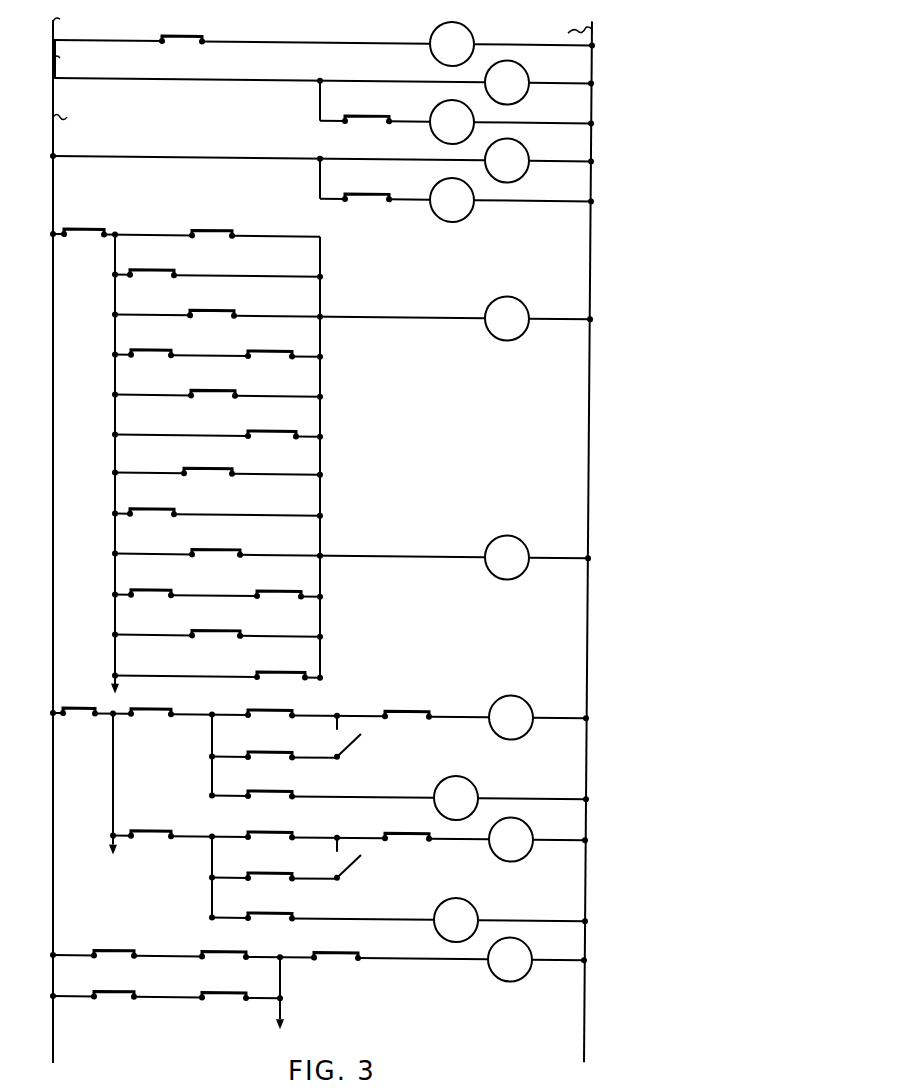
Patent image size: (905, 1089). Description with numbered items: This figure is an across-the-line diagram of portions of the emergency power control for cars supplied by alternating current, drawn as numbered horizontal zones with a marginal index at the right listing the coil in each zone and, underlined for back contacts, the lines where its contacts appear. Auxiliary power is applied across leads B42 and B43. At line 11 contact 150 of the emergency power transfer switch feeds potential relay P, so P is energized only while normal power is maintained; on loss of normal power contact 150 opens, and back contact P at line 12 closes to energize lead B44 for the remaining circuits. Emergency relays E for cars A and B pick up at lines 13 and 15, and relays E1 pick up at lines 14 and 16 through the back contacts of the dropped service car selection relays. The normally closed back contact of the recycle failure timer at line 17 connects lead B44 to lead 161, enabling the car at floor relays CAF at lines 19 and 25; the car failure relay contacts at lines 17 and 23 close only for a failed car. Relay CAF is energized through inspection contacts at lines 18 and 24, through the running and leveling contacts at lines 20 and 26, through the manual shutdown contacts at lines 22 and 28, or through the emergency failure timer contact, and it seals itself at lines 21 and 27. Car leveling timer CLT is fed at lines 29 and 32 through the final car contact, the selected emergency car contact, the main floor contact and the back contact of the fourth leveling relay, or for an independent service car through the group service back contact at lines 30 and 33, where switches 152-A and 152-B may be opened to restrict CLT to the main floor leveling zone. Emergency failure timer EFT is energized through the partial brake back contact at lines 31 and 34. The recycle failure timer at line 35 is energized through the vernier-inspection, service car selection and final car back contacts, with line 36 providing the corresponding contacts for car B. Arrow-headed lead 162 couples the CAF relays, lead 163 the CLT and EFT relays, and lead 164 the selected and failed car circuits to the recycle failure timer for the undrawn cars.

The lead B42 is at (74, 537).
The lead B43 is at (562, 542).
The lead B44 is at (76, 120).
The contact 150 is at (178, 33).
The switch 152-A is at (352, 739).
The switch 152-B is at (352, 860).
The lead 161 is at (115, 398).
The lead 162 is at (117, 689).
The lead 163 is at (116, 851).
The lead 164 is at (283, 1003).
The line 11 is at (371, 39).
The line 12 is at (337, 62).
The line 13 is at (366, 90).
The line 14 is at (563, 122).
The line 15 is at (365, 168).
The line 16 is at (563, 200).
The line 17 is at (336, 232).
The line 18 is at (367, 272).
The line 19 is at (444, 318).
The line 20 is at (367, 352).
The line 21 is at (367, 392).
The line 22 is at (367, 432).
The line 23 is at (367, 470).
The line 24 is at (367, 511).
The line 25 is at (457, 557).
The line 26 is at (367, 592).
The line 27 is at (367, 632).
The line 28 is at (367, 673).
The line 29 is at (373, 715).
The line 30 is at (415, 744).
The line 31 is at (453, 798).
The line 32 is at (403, 838).
The line 33 is at (415, 866).
The line 34 is at (453, 920).
The line 35 is at (379, 958).
The line 36 is at (336, 994).